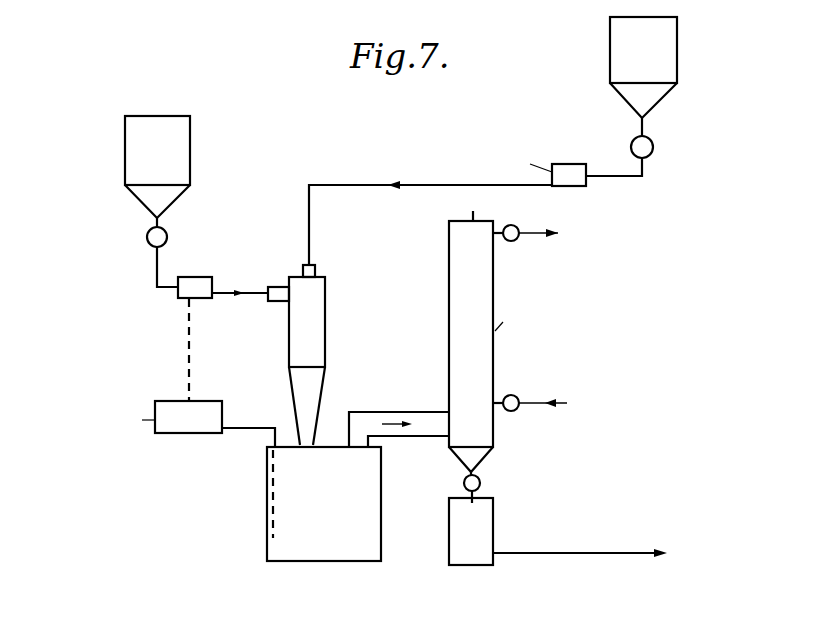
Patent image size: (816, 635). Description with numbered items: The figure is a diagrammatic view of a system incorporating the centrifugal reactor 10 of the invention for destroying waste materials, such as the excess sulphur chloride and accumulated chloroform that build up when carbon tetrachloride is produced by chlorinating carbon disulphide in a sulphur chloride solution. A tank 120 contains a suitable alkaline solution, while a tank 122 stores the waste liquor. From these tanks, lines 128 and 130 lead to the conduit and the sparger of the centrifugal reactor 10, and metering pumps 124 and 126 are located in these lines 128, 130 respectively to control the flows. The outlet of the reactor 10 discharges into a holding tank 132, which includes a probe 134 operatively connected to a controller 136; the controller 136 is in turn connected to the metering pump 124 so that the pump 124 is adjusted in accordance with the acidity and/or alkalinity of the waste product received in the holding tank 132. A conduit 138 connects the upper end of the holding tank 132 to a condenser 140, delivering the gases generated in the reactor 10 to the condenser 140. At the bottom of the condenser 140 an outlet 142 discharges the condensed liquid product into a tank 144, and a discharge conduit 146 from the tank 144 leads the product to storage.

The centrifugal reactor 10 is at (340, 302).
The tank 120 is at (190, 152).
The tank 122 is at (677, 42).
The metering pump 124 is at (212, 283).
The metering pump 126 is at (586, 183).
The line 128 is at (157, 262).
The line 130 is at (433, 185).
The holding tank 132 is at (357, 556).
The probe 134 is at (271, 505).
The controller 136 is at (203, 433).
The conduit 138 is at (395, 412).
The condenser 140 is at (494, 355).
The outlet 142 is at (477, 472).
The tank 144 is at (474, 563).
The discharge conduit 146 is at (604, 556).